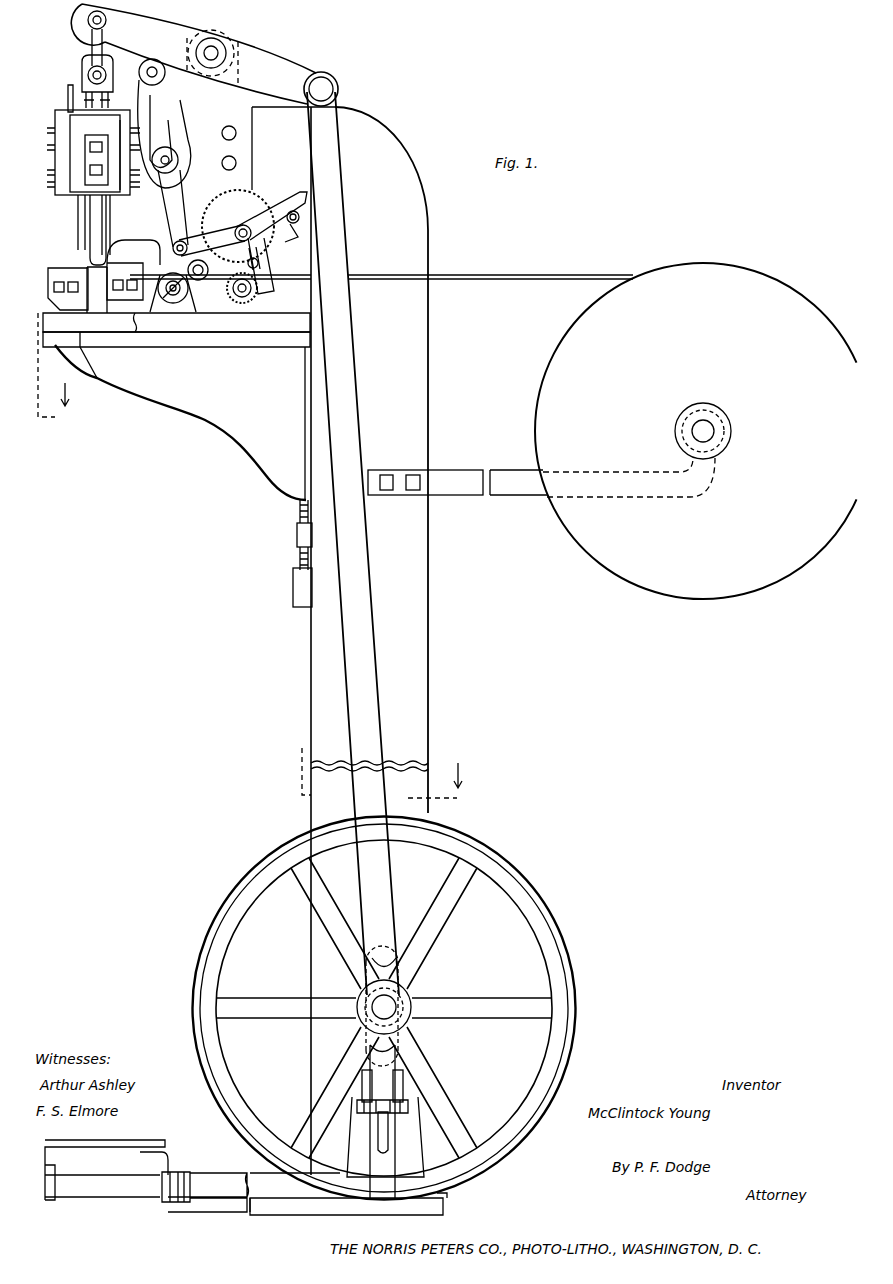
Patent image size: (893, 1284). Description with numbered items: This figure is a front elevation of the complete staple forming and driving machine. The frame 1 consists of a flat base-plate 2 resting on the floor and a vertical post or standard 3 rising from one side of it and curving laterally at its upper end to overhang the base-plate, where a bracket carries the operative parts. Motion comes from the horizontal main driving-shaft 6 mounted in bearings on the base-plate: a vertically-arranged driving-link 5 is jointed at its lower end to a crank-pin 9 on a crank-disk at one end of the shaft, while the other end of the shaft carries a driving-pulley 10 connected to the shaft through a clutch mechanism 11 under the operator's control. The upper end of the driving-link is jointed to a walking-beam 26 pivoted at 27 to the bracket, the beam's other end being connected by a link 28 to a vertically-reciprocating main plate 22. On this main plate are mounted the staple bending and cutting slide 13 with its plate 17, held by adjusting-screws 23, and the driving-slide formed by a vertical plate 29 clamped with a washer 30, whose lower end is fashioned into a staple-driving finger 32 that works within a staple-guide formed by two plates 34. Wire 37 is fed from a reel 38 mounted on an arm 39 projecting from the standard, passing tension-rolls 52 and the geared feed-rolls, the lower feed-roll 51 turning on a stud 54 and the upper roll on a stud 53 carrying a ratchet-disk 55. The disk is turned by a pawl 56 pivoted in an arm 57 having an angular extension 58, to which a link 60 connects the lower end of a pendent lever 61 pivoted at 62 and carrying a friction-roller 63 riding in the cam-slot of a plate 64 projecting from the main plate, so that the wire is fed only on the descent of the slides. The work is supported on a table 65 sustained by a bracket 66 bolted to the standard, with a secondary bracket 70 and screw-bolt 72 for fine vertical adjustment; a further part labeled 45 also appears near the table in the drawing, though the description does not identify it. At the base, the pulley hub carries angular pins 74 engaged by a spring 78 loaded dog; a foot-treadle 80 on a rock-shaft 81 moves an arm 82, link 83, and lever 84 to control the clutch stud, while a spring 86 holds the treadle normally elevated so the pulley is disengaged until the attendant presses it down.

The frame 1 is at (430, 423).
The base-plate 2 is at (450, 1210).
The post or standard 3 is at (420, 626).
The driving-link 5 is at (336, 148).
The main driving-shaft 6 is at (386, 1006).
The crank-pin 9 is at (420, 1040).
The driving-pulley 10 is at (555, 920).
The clutch mechanism 11 is at (404, 995).
The staple bending and cutting slide 13 is at (176, 322).
The plate 17 is at (78, 203).
The main plate 22 is at (82, 80).
The adjusting-screws 23 is at (125, 150).
The walking-beam 26 is at (204, 55).
The pivot 27 is at (215, 52).
The link 28 is at (104, 42).
The vertical plate 29 is at (112, 205).
The washer 30 is at (93, 152).
The staple-driving finger 32 is at (147, 278).
The plates 34 is at (60, 270).
The wire 37 is at (153, 308).
The reel 38 is at (695, 431).
The arm 39 is at (462, 476).
The block 45 is at (66, 323).
The lower feed-roll 51 is at (252, 300).
The tension-rolls 52 is at (180, 292).
The stud 53 is at (299, 242).
The stud 54 is at (256, 296).
The ratchet-disk 55 is at (238, 226).
The pawl 56 is at (305, 200).
The arm 57 is at (292, 224).
The angular extension 58 is at (276, 294).
The link 60 is at (228, 238).
The pendent lever 61 is at (168, 206).
The pivot 62 is at (158, 76).
The friction-roller 63 is at (172, 152).
The plate 64 is at (166, 108).
The table 65 is at (214, 342).
The bracket 66 is at (180, 422).
The secondary bracket 70 is at (292, 586).
The screw-bolt 72 is at (255, 442).
The angular pins 74 is at (88, 228).
The spring 78 is at (66, 102).
The foot-treadle 80 is at (166, 1142).
The rock-shaft 81 is at (225, 1181).
The arm 82 is at (386, 1164).
The link 83 is at (387, 1115).
The lever 84 is at (362, 1080).
The spring 86 is at (182, 1174).